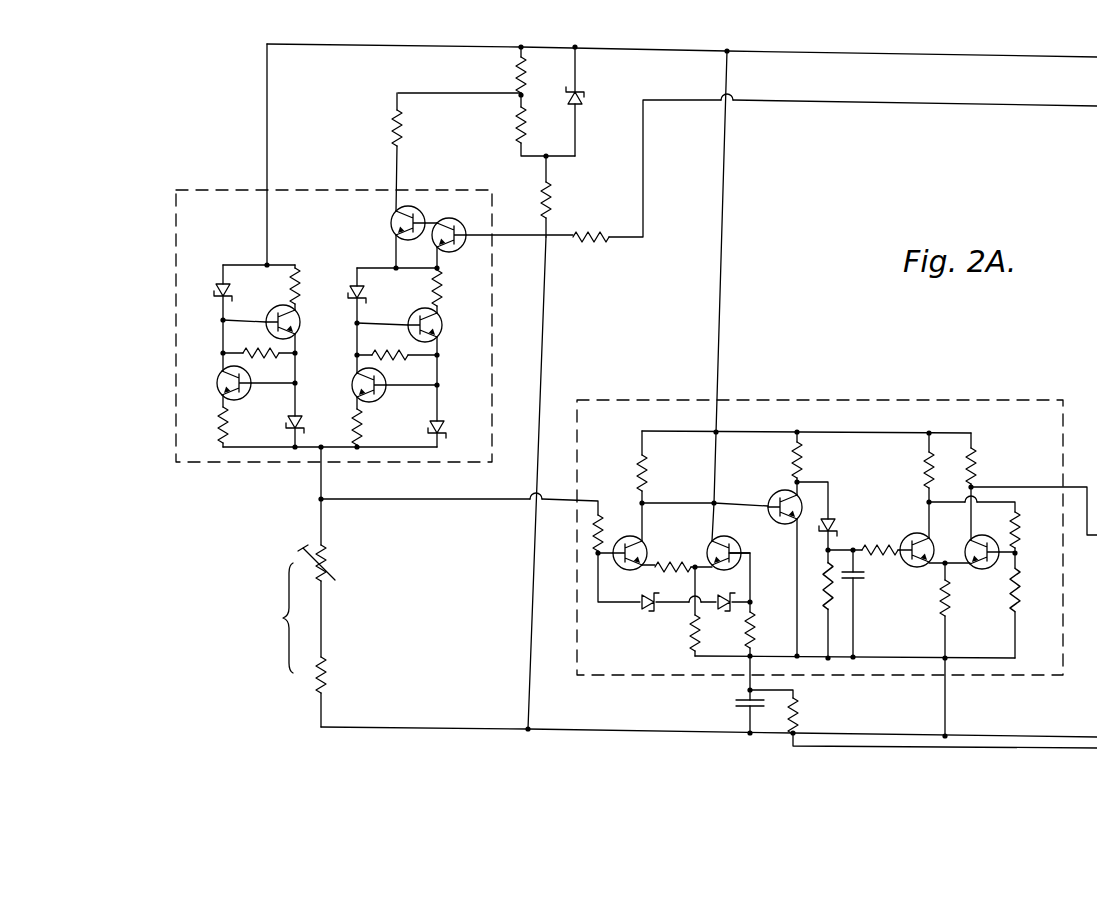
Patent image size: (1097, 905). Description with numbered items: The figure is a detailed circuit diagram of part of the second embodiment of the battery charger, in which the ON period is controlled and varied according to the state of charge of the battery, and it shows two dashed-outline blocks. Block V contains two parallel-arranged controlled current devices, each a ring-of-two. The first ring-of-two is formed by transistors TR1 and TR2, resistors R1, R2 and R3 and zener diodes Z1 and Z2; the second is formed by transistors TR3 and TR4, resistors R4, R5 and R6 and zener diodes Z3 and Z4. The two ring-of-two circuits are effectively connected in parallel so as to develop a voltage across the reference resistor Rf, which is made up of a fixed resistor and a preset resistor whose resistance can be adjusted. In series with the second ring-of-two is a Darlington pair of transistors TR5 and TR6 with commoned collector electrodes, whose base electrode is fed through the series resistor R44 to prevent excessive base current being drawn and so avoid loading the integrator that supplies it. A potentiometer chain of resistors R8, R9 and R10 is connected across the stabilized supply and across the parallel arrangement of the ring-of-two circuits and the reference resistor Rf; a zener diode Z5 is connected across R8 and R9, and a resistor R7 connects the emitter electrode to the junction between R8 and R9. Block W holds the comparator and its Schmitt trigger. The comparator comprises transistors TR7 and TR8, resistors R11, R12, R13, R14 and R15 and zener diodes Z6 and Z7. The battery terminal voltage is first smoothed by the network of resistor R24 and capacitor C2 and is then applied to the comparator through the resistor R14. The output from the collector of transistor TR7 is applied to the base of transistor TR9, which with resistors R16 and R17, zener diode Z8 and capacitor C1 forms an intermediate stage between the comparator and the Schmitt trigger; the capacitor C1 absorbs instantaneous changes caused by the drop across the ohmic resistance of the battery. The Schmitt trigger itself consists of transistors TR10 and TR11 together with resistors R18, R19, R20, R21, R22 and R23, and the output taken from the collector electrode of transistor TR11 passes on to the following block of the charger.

The block V is at (334, 315).
The block W is at (820, 523).
The resistor R1 is at (298, 288).
The resistor R2 is at (218, 424).
The resistor R3 is at (256, 341).
The resistor R4 is at (441, 290).
The resistor R5 is at (361, 427).
The resistor R6 is at (388, 343).
The resistor R7 is at (402, 138).
The resistor R8 is at (517, 84).
The resistor R9 is at (504, 125).
The resistor R10 is at (549, 196).
The resistor R11 is at (600, 515).
The resistor R12 is at (675, 556).
The resistor R13 is at (690, 635).
The resistor R14 is at (753, 621).
The resistor R15 is at (646, 468).
The resistor R16 is at (803, 466).
The resistor R17 is at (823, 582).
The resistor R18 is at (870, 553).
The resistor R19 is at (925, 478).
The resistor R20 is at (977, 468).
The resistor R21 is at (1017, 528).
The resistor R22 is at (1017, 590).
The resistor R23 is at (950, 620).
The resistor R24 is at (800, 708).
The series resistor R44 is at (593, 243).
The reference resistor Rf is at (267, 618).
The zener diode Z1 is at (216, 286).
The zener diode Z2 is at (285, 422).
The zener diode Z3 is at (364, 291).
The zener diode Z4 is at (443, 421).
The zener diode Z5 is at (583, 96).
The zener diode Z6 is at (645, 612).
The zener diode Z7 is at (722, 612).
The zener diode Z8 is at (834, 522).
The transistor TR1 is at (300, 316).
The transistor TR2 is at (218, 380).
The transistor TR3 is at (434, 314).
The transistor TR4 is at (352, 387).
The transistor TR5 is at (410, 210).
The transistor TR6 is at (458, 218).
The transistor TR7 is at (645, 542).
The transistor TR8 is at (734, 543).
The transistor TR9 is at (779, 494).
The transistor TR10 is at (907, 538).
The transistor TR11 is at (978, 570).
The capacitor C1 is at (858, 582).
The capacitor C2 is at (735, 703).